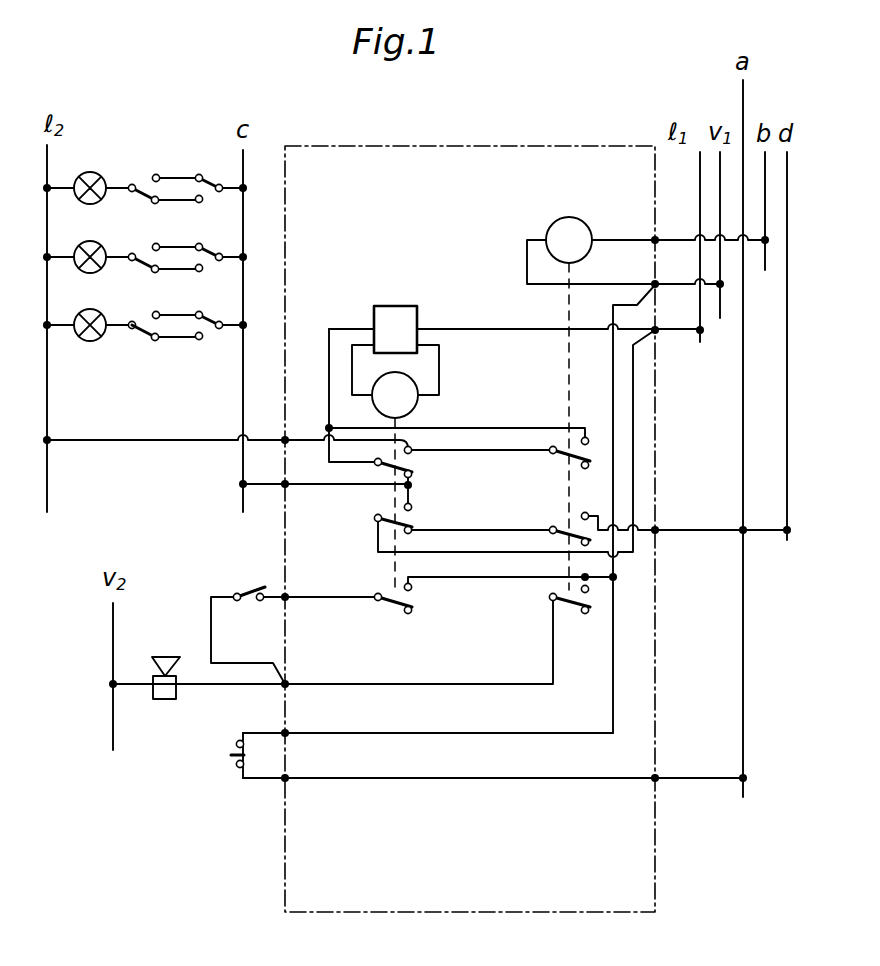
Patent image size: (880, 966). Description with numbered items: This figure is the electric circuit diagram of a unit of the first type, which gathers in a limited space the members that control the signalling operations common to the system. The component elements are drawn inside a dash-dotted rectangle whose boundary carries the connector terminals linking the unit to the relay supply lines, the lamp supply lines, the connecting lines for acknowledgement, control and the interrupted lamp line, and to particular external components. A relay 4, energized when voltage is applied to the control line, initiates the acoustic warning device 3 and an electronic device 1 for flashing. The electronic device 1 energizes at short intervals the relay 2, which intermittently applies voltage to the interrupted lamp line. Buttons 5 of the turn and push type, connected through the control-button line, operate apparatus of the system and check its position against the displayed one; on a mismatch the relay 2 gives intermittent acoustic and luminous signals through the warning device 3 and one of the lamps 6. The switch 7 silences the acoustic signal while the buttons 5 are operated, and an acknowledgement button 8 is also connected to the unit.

The electronic device 1 is at (393, 302).
The relay 2 is at (418, 404).
The acoustic warning device 3 is at (158, 700).
The relay 4 is at (586, 226).
The buttons 5 is at (146, 333).
The lamps 6 is at (90, 342).
The switch 7 is at (252, 588).
The acknowledgement button 8 is at (231, 755).